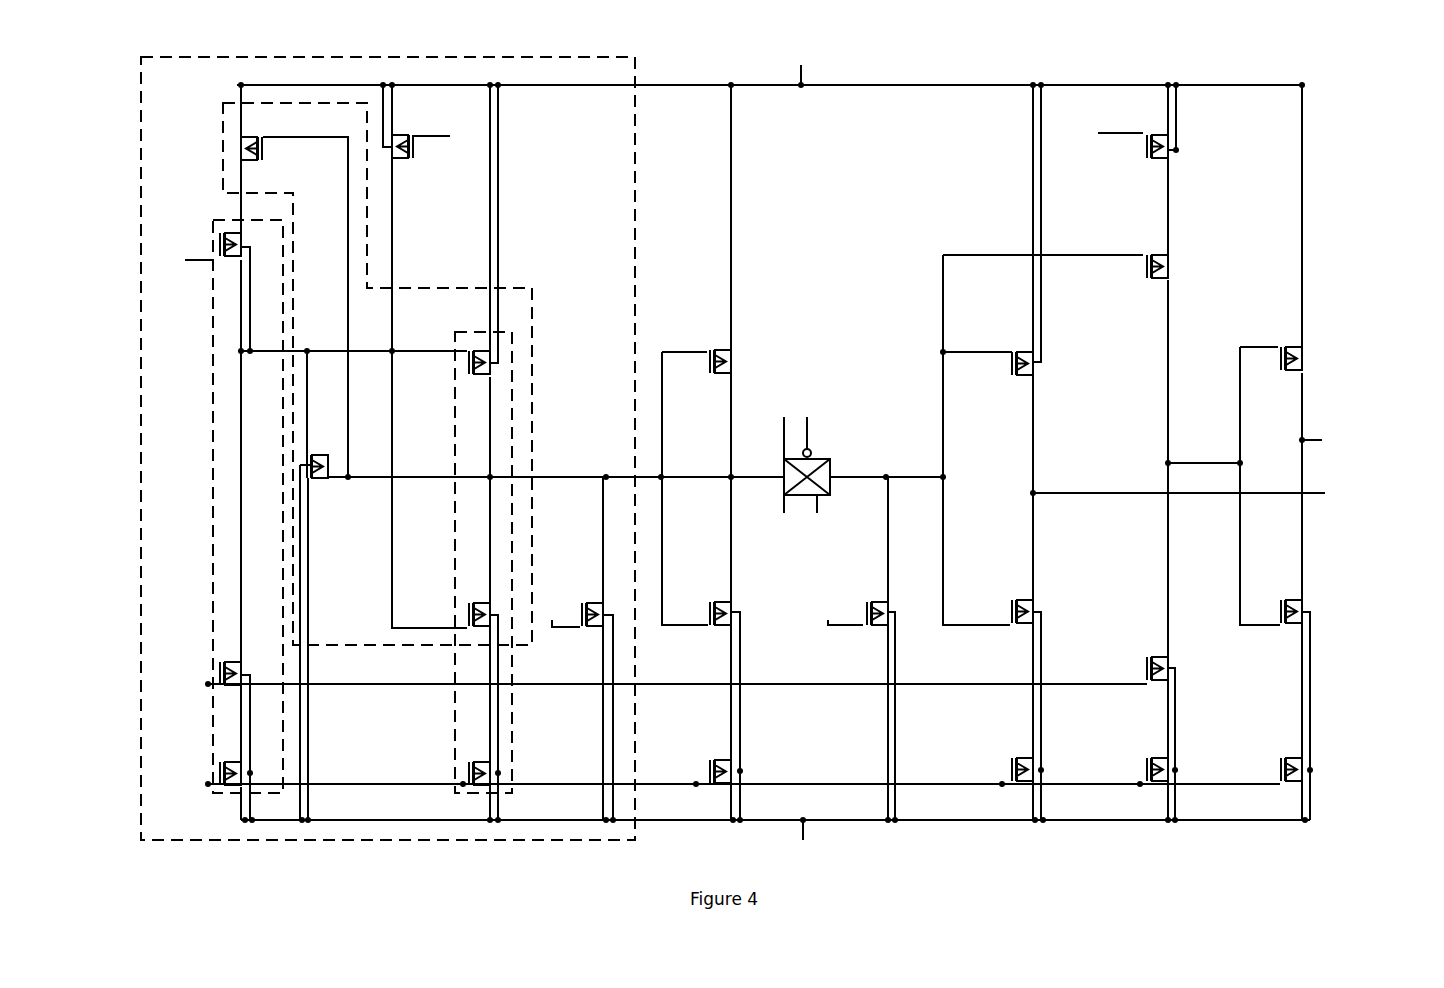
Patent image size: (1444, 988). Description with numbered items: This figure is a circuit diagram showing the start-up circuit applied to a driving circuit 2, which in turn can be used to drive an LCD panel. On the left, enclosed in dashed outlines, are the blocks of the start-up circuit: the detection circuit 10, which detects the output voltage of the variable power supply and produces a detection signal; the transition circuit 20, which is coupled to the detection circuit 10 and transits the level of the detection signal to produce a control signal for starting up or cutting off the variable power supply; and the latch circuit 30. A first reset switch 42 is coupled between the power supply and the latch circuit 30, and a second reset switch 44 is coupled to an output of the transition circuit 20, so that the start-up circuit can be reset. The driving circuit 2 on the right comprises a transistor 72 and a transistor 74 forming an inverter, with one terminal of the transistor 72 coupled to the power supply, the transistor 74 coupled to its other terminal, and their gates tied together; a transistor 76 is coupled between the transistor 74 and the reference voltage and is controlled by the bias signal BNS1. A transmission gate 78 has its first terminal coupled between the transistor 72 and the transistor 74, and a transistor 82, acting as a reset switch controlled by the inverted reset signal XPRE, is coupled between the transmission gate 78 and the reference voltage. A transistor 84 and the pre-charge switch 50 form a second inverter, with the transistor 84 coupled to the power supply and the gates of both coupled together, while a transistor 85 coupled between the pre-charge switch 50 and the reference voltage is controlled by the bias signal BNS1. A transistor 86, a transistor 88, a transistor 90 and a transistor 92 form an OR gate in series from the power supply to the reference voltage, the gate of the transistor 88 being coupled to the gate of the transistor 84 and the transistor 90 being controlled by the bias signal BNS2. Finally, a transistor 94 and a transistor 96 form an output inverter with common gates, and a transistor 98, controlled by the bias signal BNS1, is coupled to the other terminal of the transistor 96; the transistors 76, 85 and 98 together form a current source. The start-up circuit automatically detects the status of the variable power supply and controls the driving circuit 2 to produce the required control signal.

The driving circuit 2 is at (1216, 52).
The detection circuit 10 is at (213, 230).
The transition circuit 20 is at (533, 352).
The latch circuit 30 is at (223, 130).
The first reset switch 42 is at (405, 158).
The second reset switch 44 is at (608, 612).
The pre-charge switch 50 is at (1035, 612).
The transistor 72 is at (735, 362).
The transistor 74 is at (733, 612).
The transistor 76 is at (742, 768).
The transmission gate 78 is at (830, 460).
The transistor 82 is at (890, 603).
The transistor 84 is at (1035, 362).
The transistor 85 is at (1042, 770).
The transistor 86 is at (1177, 150).
The transistor 88 is at (1170, 268).
The transistor 90 is at (1176, 668).
The transistor 92 is at (1176, 770).
The transistor 94 is at (1305, 367).
The transistor 96 is at (1305, 612).
The transistor 98 is at (1310, 775).